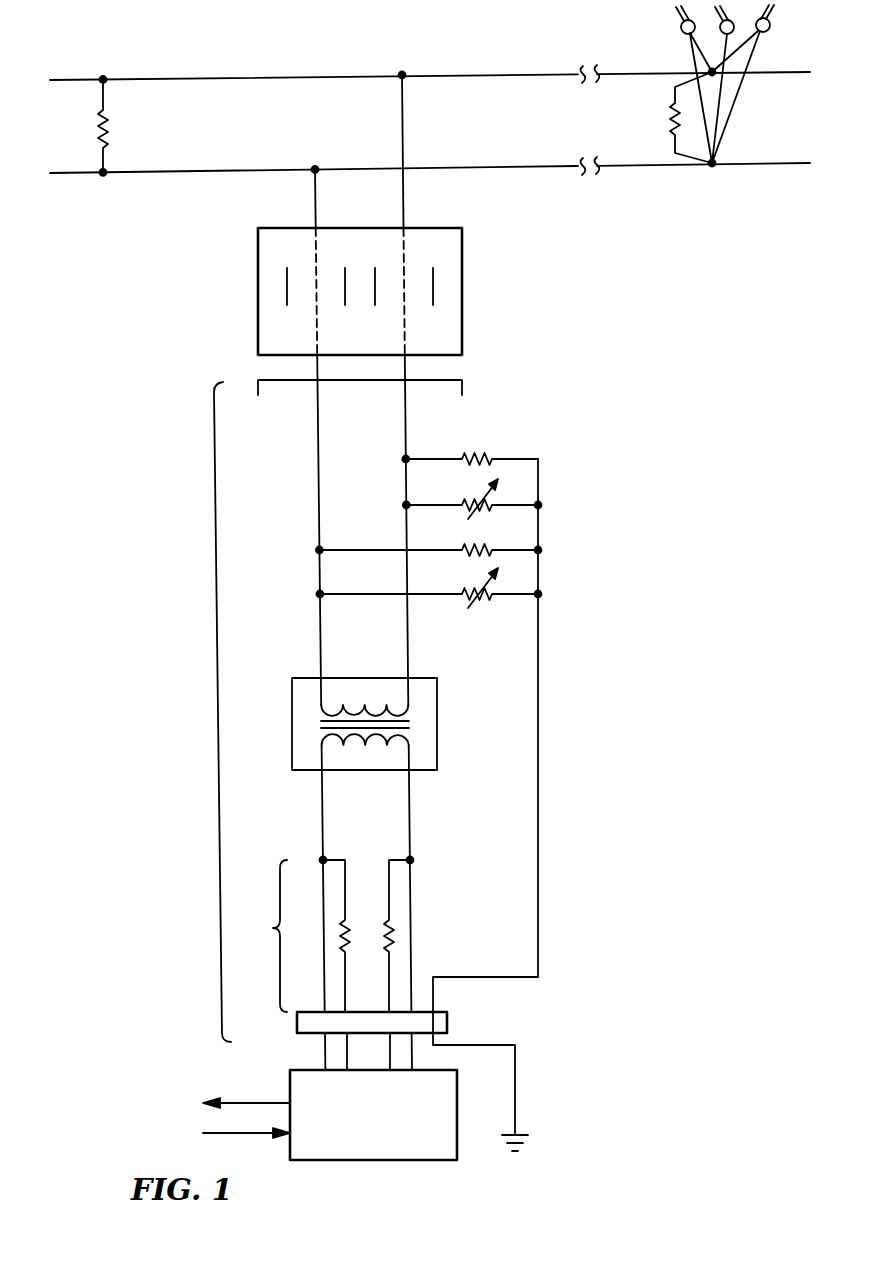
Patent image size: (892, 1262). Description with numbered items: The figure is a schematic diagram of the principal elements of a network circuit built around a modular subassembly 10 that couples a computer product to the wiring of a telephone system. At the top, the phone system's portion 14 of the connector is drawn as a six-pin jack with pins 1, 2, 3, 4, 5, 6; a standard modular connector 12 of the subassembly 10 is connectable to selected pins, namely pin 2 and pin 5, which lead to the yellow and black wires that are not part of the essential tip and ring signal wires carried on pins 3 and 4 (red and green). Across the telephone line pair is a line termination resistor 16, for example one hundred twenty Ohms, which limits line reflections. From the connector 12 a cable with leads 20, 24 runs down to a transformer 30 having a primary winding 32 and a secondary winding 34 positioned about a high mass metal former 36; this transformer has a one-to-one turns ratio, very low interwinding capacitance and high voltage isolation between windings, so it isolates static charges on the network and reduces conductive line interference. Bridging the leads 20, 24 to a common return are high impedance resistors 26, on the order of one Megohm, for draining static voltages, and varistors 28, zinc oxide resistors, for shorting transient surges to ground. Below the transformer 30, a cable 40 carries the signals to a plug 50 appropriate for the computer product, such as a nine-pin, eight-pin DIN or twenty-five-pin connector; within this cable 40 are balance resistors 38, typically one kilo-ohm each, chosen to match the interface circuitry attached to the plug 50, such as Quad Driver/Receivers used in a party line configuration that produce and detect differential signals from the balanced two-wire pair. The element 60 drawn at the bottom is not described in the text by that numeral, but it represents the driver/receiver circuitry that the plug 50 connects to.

The modular subassembly 10 is at (215, 704).
The RJ-11 standard connector 12 is at (463, 384).
The phone system's portion of the connector 14 is at (463, 323).
The line termination resistor 16 is at (108, 124).
The jack pin 1 is at (292, 312).
The pin 2 is at (329, 195).
The pin 3 is at (350, 312).
The pin 4 is at (379, 312).
The pin 5 is at (417, 194).
The jack pin 6 is at (438, 312).
The cable lead 20 is at (320, 423).
The cable lead 24 is at (407, 422).
The high impedance resistor 26 is at (506, 534).
The varistor 28 is at (463, 588).
The transformer 30 is at (384, 696).
The primary winding 32 is at (319, 705).
The secondary winding 34 is at (321, 744).
The high mass metal former 36 is at (416, 722).
The balance resistor 38 is at (424, 930).
The cable 40 is at (351, 964).
The plug 50 is at (448, 1020).
The quad driver/receiver 60 is at (422, 1157).